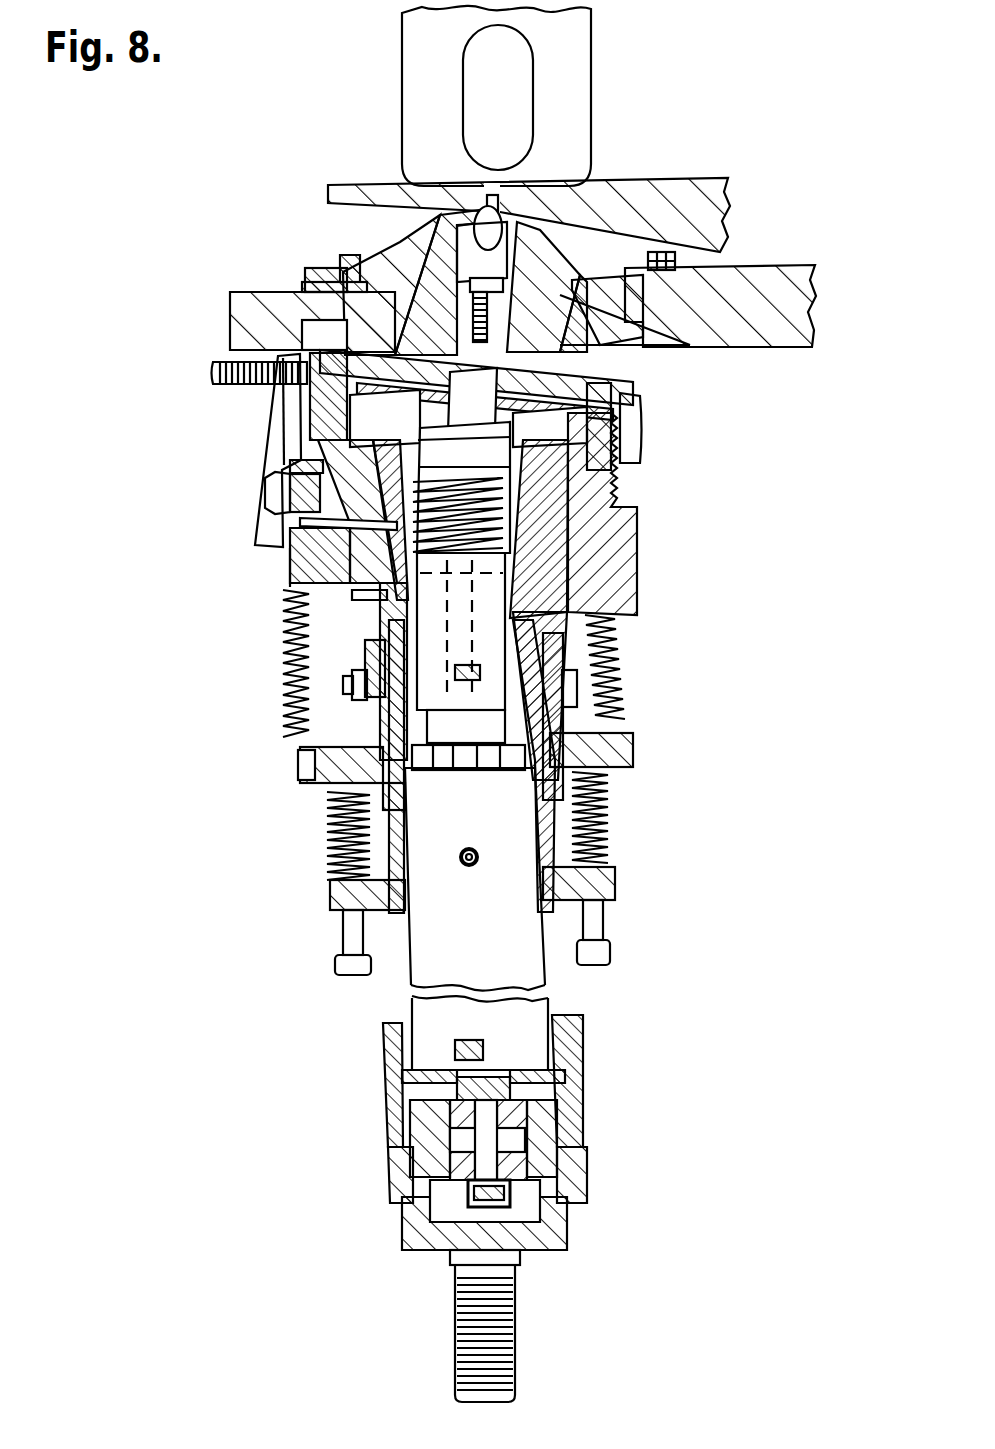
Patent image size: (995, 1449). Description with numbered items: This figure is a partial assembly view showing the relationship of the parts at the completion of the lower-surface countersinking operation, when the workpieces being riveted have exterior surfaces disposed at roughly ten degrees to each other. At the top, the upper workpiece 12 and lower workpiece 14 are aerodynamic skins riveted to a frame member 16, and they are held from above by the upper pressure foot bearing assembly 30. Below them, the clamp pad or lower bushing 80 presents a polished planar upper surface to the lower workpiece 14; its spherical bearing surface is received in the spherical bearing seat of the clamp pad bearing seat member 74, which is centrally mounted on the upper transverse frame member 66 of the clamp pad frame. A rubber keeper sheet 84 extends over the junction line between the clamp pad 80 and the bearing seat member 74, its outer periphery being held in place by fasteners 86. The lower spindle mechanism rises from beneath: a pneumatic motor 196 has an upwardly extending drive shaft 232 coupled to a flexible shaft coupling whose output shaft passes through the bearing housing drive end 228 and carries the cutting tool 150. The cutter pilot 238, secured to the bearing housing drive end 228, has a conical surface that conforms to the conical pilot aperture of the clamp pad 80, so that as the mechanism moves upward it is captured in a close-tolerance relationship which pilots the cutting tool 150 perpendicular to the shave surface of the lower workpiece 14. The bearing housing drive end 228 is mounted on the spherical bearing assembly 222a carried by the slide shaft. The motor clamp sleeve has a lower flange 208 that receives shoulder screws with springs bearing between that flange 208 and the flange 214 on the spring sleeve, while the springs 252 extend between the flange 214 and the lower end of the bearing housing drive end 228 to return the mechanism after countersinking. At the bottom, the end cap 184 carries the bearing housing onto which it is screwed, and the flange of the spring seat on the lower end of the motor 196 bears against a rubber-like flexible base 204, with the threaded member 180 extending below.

The upper pressure foot bearing assembly 30 is at (583, 79).
The upper workpiece 12 is at (564, 194).
The lower workpiece 14 is at (529, 215).
The frame member 16 is at (640, 192).
The cutting tool 150 is at (437, 232).
The rubber keeper sheet 84 is at (360, 252).
The clamp pad or lower bushing 80 is at (553, 245).
The fasteners 86 is at (312, 270).
The upper transverse frame member 66 is at (747, 268).
The clamp pad bearing seat member 74 is at (628, 346).
The cutter pilot 238 is at (540, 358).
The bearing housing drive end 228 is at (620, 502).
The spherical bearing assembly 222a is at (357, 593).
The springs 252 is at (283, 662).
The drive shaft 232 is at (378, 724).
The flange 214 is at (636, 750).
The lower radially outwardly extending flange 208 is at (618, 884).
The pneumatic motor 196 is at (411, 988).
The rubber-like flexible base 204 is at (588, 1070).
The end cap 184 is at (572, 1232).
The threaded pipe 180 is at (518, 1338).